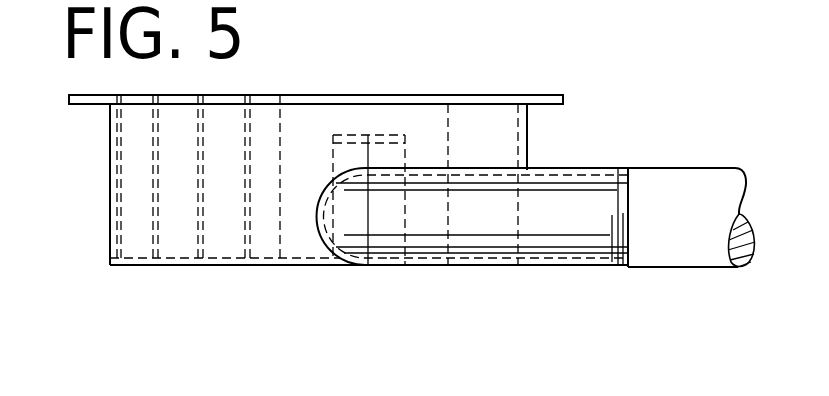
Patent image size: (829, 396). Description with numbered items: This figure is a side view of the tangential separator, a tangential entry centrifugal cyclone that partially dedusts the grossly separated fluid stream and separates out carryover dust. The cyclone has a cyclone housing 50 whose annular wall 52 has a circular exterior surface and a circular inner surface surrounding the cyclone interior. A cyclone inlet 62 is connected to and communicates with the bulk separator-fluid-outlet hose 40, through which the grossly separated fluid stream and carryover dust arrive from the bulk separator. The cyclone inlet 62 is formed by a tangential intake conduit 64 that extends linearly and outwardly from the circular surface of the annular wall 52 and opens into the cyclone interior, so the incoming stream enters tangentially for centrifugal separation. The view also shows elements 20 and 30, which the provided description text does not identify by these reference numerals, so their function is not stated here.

The mounting plate 20 is at (527, 106).
The housing 30 is at (110, 175).
The bulk separator-fluid-outlet hose 40 is at (677, 267).
The cyclone housing 50 is at (110, 265).
The annular wall 52 is at (527, 143).
The cyclone inlet 62 is at (630, 203).
The tangential intake conduit 64 is at (510, 266).